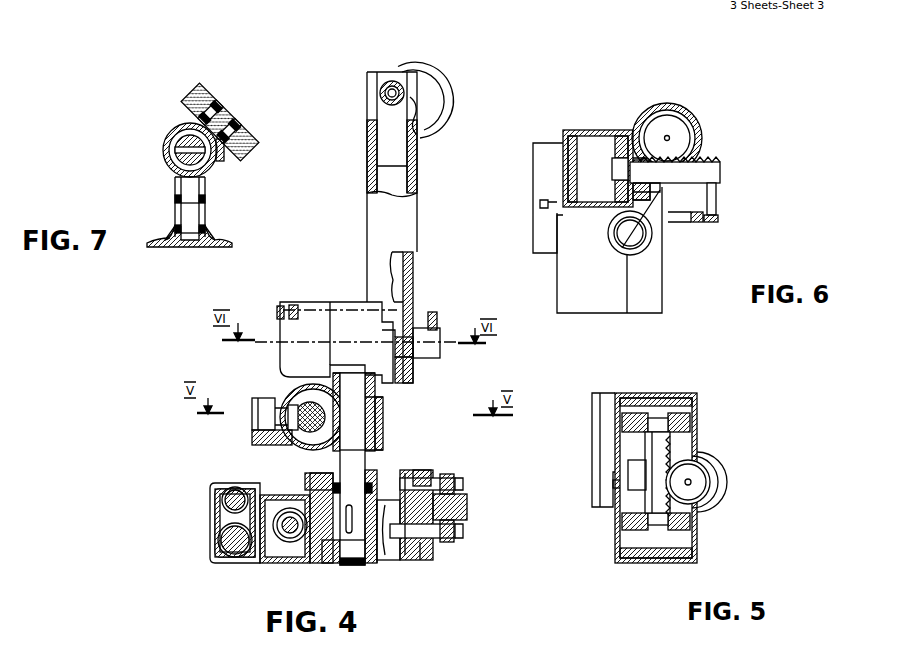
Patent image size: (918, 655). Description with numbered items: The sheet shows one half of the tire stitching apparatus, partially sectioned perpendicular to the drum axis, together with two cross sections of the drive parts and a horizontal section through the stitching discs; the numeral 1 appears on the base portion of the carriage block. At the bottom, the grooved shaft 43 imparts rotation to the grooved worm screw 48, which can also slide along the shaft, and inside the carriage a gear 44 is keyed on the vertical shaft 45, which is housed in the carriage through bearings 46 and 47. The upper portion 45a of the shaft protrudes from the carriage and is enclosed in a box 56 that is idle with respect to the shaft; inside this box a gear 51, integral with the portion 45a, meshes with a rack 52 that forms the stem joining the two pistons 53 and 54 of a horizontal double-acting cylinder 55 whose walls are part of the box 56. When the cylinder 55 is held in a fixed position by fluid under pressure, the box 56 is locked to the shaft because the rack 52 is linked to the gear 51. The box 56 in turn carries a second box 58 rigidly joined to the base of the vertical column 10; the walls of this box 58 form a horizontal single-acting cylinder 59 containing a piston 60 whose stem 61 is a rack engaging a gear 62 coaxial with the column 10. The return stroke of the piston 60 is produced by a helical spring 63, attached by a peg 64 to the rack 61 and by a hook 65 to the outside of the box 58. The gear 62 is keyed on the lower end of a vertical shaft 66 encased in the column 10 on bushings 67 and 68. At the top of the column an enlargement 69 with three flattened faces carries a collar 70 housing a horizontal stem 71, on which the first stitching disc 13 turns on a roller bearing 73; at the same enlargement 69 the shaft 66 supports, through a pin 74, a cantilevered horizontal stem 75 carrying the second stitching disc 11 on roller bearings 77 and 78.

In FIG. 4, the base block 1 is at (268, 493).
In FIG. 4, the column 10 is at (413, 276).
In FIG. 6, the column 10 is at (690, 118).
In FIG. 7, the second stitching disc 11 is at (216, 244).
In FIG. 7, the first stitching disc 13 is at (246, 148).
In FIG. 4, the grooved shaft 43 is at (290, 516).
In FIG. 4, the gear 44 is at (318, 541).
In FIG. 4, the vertical shaft 45 is at (358, 470).
In FIG. 4, the upper portion of shaft 45a is at (357, 391).
In FIG. 4, the bearing 46 is at (378, 532).
In FIG. 4, the bearing 47 is at (333, 556).
In FIG. 4, the worm screw 48 is at (287, 541).
In FIG. 4, the gear 51 is at (363, 419).
In FIG. 5, the gear 51 is at (700, 490).
In FIG. 4, the rack 52 is at (310, 430).
In FIG. 5, the rack 52 is at (660, 453).
In FIG. 5, the piston 53 is at (690, 428).
In FIG. 5, the piston 54 is at (695, 521).
In FIG. 4, the double-acting cylinder 55 is at (289, 392).
In FIG. 5, the double-acting cylinder 55 is at (612, 530).
In FIG. 4, the box 56 is at (384, 416).
In FIG. 5, the box 56 is at (695, 549).
In FIG. 4, the second box 58 is at (286, 351).
In FIG. 6, the second box 58 is at (583, 130).
In FIG. 6, the single-acting cylinder 59 is at (619, 126).
In FIG. 6, the piston 60 is at (633, 196).
In FIG. 6, the stem 61 is at (700, 178).
In FIG. 4, the gear 62 is at (402, 351).
In FIG. 6, the gear 62 is at (680, 135).
In FIG. 4, the helical spring 63 is at (294, 306).
In FIG. 6, the helical spring 63 is at (700, 222).
In FIG. 4, the peg 64 is at (440, 312).
In FIG. 6, the peg 64 is at (714, 199).
In FIG. 4, the hook 65 is at (279, 308).
In FIG. 7, the vertical shaft 66 is at (172, 158).
In FIG. 4, the vertical shaft 66 is at (394, 294).
In FIG. 4, the bushing 67 is at (413, 152).
In FIG. 4, the bushing 68 is at (414, 373).
In FIG. 7, the enlargement 69 is at (176, 153).
In FIG. 4, the enlargement 69 is at (367, 113).
In FIG. 7, the collar 70 is at (222, 152).
In FIG. 7, the stem 71 is at (210, 115).
In FIG. 7, the roller bearing 73 is at (229, 135).
In FIG. 7, the pin 74 is at (180, 150).
In FIG. 7, the stem 75 is at (190, 188).
In FIG. 7, the roller bearing 77 is at (204, 200).
In FIG. 7, the roller bearing 78 is at (206, 230).